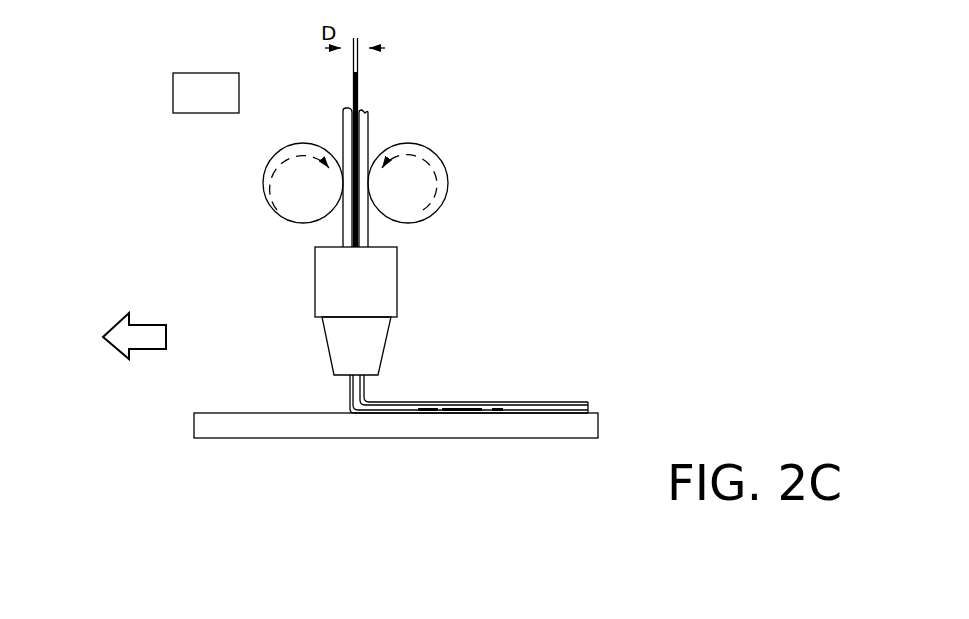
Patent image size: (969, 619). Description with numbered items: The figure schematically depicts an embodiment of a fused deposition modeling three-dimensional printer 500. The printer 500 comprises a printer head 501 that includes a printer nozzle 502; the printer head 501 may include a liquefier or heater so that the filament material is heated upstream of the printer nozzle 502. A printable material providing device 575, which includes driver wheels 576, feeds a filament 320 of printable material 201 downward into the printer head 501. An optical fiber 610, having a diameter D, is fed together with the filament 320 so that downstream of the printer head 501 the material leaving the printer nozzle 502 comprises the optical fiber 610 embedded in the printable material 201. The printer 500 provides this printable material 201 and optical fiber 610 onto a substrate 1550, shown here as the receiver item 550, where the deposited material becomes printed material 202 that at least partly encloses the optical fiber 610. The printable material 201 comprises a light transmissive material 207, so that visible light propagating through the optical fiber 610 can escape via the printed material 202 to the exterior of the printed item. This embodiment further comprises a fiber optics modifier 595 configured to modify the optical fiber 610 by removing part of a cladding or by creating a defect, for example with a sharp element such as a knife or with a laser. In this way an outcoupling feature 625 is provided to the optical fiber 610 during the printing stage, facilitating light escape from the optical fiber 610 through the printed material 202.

The fused deposition modeling 3D printer 500 is at (625, 207).
The fiber optics modifier 595 is at (142, 93).
The 3D printable material providing device 575 is at (217, 186).
The driver wheels 576 is at (452, 150).
The filament 320 is at (393, 237).
The printer head 501 is at (410, 283).
The printer nozzle 502 is at (397, 342).
The optical fiber 610 is at (437, 225).
The 3D printable material 201 is at (336, 391).
The outcoupling feature 625 is at (460, 378).
The 3D printed material 202 is at (541, 408).
The light transmissive material 207 is at (464, 408).
The receiver item 550 is at (471, 414).
The substrate 1550 is at (588, 430).